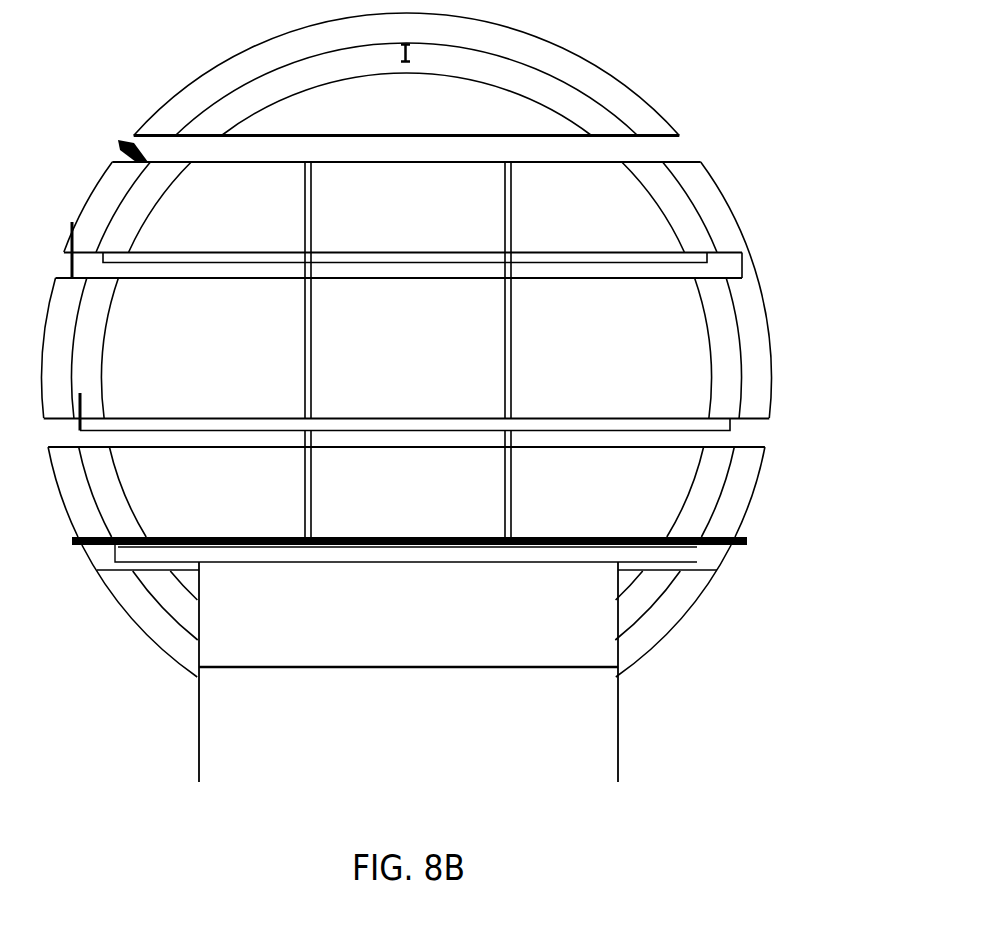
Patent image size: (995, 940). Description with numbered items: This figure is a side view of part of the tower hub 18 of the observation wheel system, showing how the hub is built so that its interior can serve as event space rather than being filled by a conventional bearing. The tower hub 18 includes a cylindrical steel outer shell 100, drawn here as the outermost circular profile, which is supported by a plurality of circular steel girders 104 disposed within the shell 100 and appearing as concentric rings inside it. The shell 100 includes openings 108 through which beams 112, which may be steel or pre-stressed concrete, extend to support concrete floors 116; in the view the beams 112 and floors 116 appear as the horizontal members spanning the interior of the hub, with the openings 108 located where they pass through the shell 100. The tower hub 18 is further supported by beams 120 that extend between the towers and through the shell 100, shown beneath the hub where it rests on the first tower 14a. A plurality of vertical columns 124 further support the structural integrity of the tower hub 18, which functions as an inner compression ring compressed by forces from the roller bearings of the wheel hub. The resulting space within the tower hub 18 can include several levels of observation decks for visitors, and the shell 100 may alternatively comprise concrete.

The tower hub 18 is at (702, 120).
The outer shell 100 is at (748, 500).
The circular steel girders 104 is at (708, 345).
The openings 108 is at (750, 262).
The floors 116 is at (628, 252).
The beams 112 is at (585, 278).
The vertical columns 124 is at (303, 330).
The beams 120 is at (272, 578).
The first tower 14a is at (590, 735).